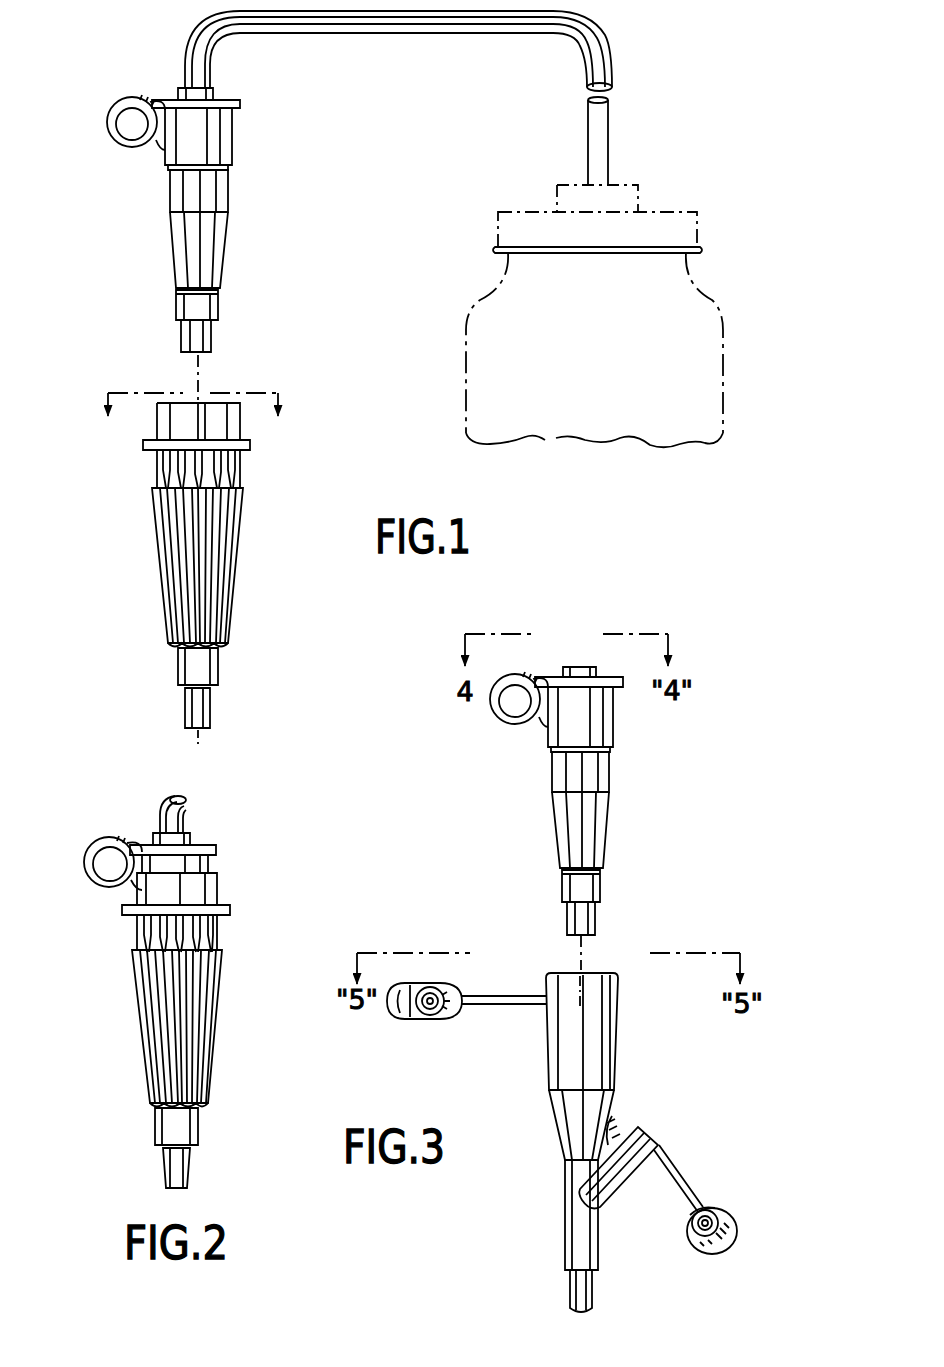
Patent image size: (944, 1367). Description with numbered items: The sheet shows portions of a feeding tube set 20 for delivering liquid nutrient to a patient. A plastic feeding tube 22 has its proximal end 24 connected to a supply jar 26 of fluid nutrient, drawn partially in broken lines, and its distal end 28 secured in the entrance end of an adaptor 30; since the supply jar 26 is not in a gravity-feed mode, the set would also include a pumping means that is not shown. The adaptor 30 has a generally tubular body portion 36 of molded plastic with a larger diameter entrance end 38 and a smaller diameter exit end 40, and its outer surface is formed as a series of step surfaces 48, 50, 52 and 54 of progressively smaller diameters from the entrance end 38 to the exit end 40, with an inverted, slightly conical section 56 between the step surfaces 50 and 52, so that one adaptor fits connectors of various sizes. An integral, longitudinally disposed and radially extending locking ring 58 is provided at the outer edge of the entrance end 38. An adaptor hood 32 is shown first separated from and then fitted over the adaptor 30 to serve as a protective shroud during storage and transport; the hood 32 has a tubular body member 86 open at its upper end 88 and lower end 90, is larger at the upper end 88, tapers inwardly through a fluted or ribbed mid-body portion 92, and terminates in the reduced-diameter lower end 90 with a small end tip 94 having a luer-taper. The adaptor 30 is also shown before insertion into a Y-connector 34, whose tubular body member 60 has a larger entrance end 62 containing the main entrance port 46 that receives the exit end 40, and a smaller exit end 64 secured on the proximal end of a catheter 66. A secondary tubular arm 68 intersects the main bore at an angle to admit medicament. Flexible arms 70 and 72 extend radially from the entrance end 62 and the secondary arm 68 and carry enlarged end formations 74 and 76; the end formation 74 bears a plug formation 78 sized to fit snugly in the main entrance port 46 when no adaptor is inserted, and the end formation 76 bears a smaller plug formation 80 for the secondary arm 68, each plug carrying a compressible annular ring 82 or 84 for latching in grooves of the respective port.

In FIG. 1, the feeding tube set 20 is at (628, 40).
In FIG. 1, the feeding tube 22 is at (390, 36).
In FIG. 2, the feeding tube 22 is at (190, 812).
In FIG. 1, the proximal end 24 is at (610, 162).
In FIG. 1, the supply jar 26 is at (466, 335).
In FIG. 1, the distal end 28 is at (184, 52).
In FIG. 2, the distal end 28 is at (158, 812).
In FIG. 1, the adaptor 30 is at (176, 228).
In FIG. 2, the adaptor 30 is at (159, 861).
In FIG. 3, the adaptor 30 is at (558, 787).
In FIG. 1, the adaptor hood 32 is at (183, 570).
In FIG. 2, the adaptor hood 32 is at (134, 1039).
In FIG. 3, the Y-connector 34 is at (575, 1115).
In FIG. 1, the tubular body portion 36 is at (189, 229).
In FIG. 3, the tubular body portion 36 is at (593, 810).
In FIG. 1, the entrance end 38 is at (180, 90).
In FIG. 2, the entrance end 38 is at (192, 838).
In FIG. 3, the entrance end 38 is at (568, 667).
In FIG. 1, the exit end 40 is at (198, 357).
In FIG. 3, the exit end 40 is at (590, 940).
In FIG. 3, the main entrance port 46 is at (560, 972).
In FIG. 1, the step surface 48 is at (165, 157).
In FIG. 2, the step surface 48 is at (218, 868).
In FIG. 3, the step surface 48 is at (550, 740).
In FIG. 1, the step surface 50 is at (170, 198).
In FIG. 3, the step surface 50 is at (553, 776).
In FIG. 1, the step surface 52 is at (176, 304).
In FIG. 3, the step surface 52 is at (562, 886).
In FIG. 1, the step surface 54 is at (181, 338).
In FIG. 3, the step surface 54 is at (567, 918).
In FIG. 1, the conical section 56 is at (171, 240).
In FIG. 3, the conical section 56 is at (557, 826).
In FIG. 1, the locking ring 58 is at (107, 122).
In FIG. 2, the locking ring 58 is at (84, 862).
In FIG. 3, the locking ring 58 is at (490, 700).
In FIG. 3, the tubular body member 60 is at (556, 1110).
In FIG. 3, the entrance end 62 is at (618, 980).
In FIG. 3, the exit end 64 is at (566, 1256).
In FIG. 3, the catheter 66 is at (571, 1302).
In FIG. 3, the secondary tubular arm 68 is at (622, 1180).
In FIG. 3, the flexible arm 70 is at (502, 1006).
In FIG. 3, the flexible arm 72 is at (685, 1190).
In FIG. 3, the end formation 74 is at (401, 1002).
In FIG. 3, the end formation 76 is at (745, 1248).
In FIG. 3, the plug formation 78 is at (438, 1020).
In FIG. 3, the plug formation 80 is at (720, 1212).
In FIG. 3, the compressible annular ring 82 is at (410, 1020).
In FIG. 3, the compressible annular ring 84 is at (696, 1243).
In FIG. 1, the tubular body member 86 is at (157, 467).
In FIG. 2, the tubular body member 86 is at (137, 926).
In FIG. 1, the upper end 88 is at (152, 435).
In FIG. 2, the upper end 88 is at (132, 900).
In FIG. 1, the lower end 90 is at (178, 664).
In FIG. 2, the lower end 90 is at (156, 1136).
In FIG. 1, the ribbed mid-body portion 92 is at (160, 578).
In FIG. 2, the ribbed mid-body portion 92 is at (136, 1032).
In FIG. 1, the end tip 94 is at (186, 710).
In FIG. 2, the end tip 94 is at (166, 1174).